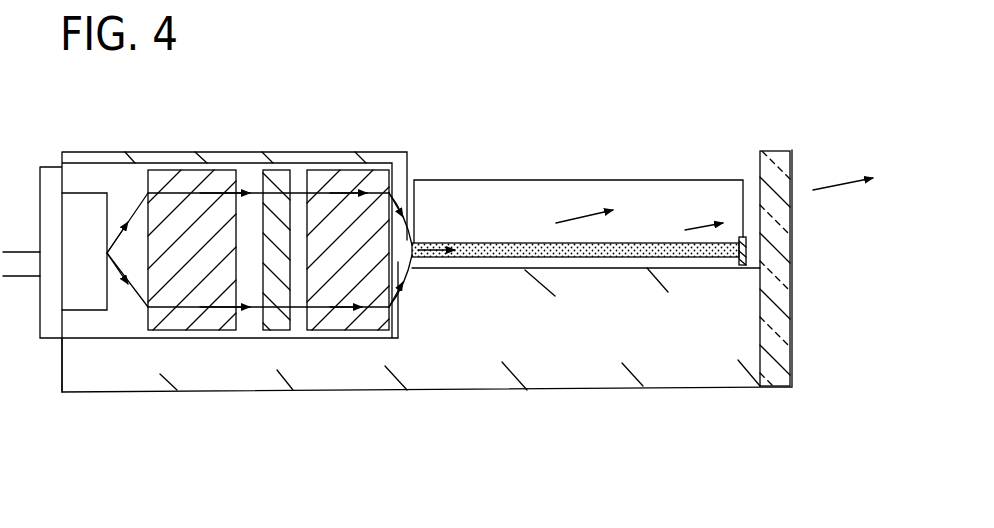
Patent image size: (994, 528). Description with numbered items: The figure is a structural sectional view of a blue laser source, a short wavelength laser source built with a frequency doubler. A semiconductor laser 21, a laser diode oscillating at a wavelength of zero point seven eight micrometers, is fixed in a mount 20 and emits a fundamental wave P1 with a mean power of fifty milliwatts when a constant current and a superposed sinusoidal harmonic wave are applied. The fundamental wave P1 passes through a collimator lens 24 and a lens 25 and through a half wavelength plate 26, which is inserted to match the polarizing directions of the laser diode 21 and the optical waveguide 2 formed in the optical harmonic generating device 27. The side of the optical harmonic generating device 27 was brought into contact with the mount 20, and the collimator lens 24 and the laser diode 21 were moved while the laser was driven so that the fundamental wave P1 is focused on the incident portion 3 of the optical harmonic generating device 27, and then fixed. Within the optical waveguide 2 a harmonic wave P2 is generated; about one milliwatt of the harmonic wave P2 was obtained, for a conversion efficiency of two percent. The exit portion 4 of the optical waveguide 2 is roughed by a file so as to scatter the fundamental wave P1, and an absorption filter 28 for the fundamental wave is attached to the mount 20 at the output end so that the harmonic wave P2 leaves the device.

The optical waveguide 2 is at (495, 240).
The incident portion 3 is at (424, 240).
The exit portion 4 is at (748, 257).
The mount 20 is at (578, 372).
The semiconductor laser 21 is at (50, 180).
The collimator lens 24 is at (192, 178).
The lens 25 is at (373, 177).
The half wavelength plate 26 is at (277, 177).
The optical harmonic generating device 27 is at (571, 195).
The absorption filter 28 is at (773, 160).
The fundamental wave P1 is at (167, 193).
The harmonic wave P2 is at (845, 181).